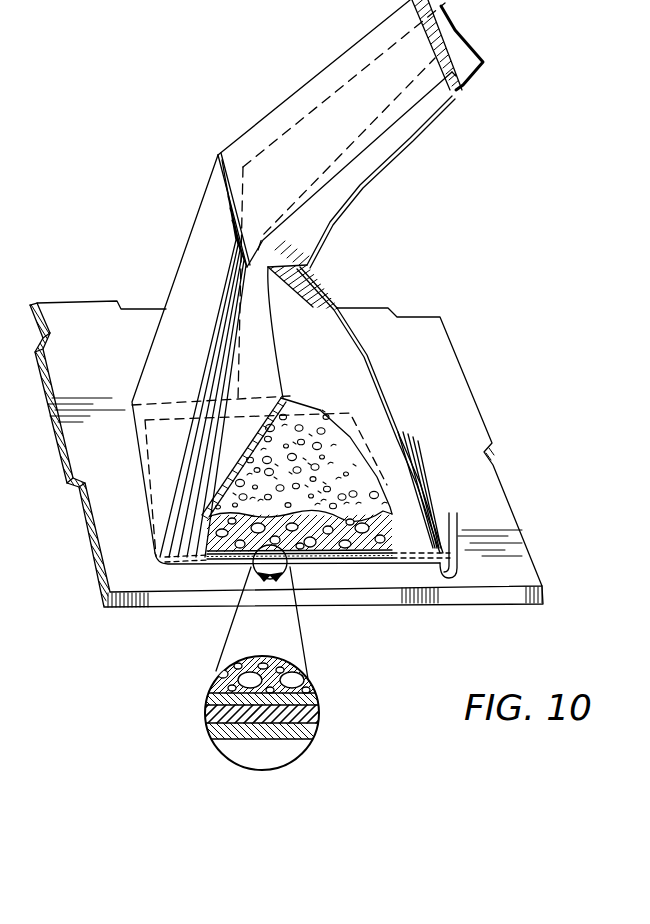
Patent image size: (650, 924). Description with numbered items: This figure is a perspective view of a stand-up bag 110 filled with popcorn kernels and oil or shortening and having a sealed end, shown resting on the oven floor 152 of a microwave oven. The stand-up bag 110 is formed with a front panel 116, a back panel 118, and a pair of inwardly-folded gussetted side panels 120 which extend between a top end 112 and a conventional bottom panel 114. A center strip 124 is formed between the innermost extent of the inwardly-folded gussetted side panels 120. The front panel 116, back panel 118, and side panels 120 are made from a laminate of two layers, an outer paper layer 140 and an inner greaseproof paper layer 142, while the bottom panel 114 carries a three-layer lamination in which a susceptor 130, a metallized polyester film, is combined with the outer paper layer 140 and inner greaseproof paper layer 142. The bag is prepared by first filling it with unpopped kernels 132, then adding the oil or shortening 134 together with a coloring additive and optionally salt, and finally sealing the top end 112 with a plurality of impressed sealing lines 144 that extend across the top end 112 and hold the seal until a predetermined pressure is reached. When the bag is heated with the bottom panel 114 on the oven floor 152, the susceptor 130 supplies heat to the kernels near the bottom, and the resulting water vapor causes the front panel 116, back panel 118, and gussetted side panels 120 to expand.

The stand-up bag 110 is at (382, 354).
The top end 112 is at (467, 37).
The bottom panel 114 is at (449, 518).
The front panel 116 is at (210, 230).
The back panel 118 is at (306, 294).
The inwardly-folded gussetted side panels 120 is at (300, 404).
The center strip 124 is at (447, 23).
The susceptor 130 is at (150, 483).
The unpopped kernels 132 is at (387, 520).
The oil or shortening 134 is at (210, 516).
The outer paper layer 140 is at (415, 560).
The inner greaseproof paper layer 142 is at (377, 560).
The impressed sealing lines 144 is at (456, 92).
The oven floor 152 is at (71, 357).